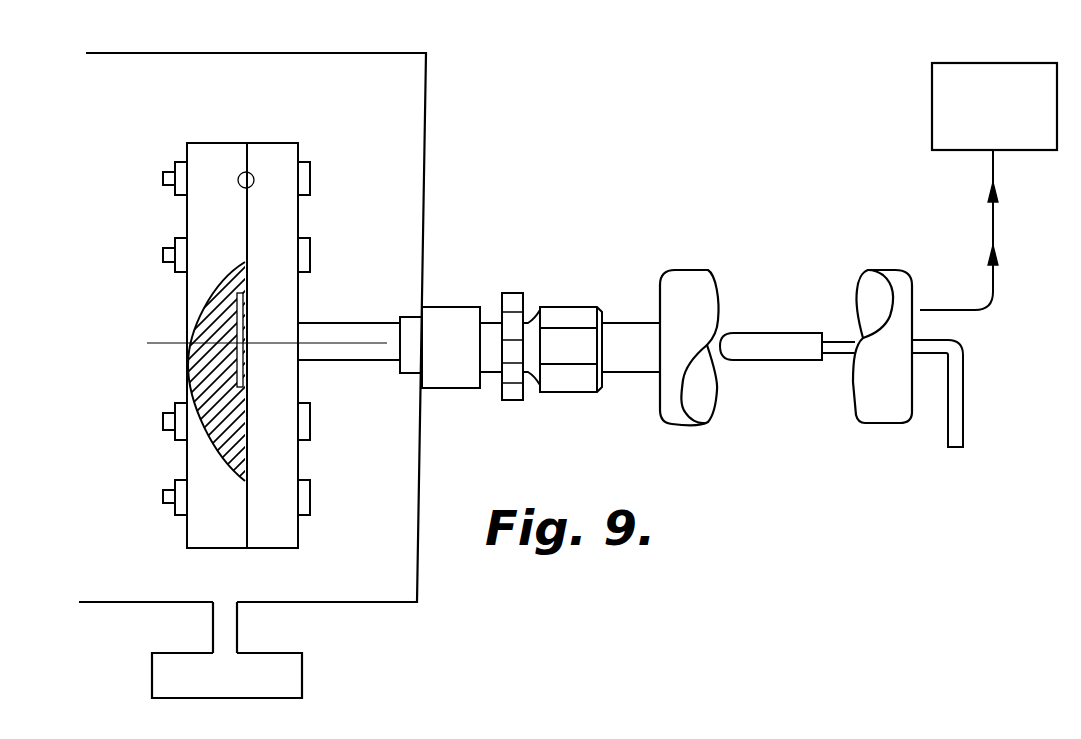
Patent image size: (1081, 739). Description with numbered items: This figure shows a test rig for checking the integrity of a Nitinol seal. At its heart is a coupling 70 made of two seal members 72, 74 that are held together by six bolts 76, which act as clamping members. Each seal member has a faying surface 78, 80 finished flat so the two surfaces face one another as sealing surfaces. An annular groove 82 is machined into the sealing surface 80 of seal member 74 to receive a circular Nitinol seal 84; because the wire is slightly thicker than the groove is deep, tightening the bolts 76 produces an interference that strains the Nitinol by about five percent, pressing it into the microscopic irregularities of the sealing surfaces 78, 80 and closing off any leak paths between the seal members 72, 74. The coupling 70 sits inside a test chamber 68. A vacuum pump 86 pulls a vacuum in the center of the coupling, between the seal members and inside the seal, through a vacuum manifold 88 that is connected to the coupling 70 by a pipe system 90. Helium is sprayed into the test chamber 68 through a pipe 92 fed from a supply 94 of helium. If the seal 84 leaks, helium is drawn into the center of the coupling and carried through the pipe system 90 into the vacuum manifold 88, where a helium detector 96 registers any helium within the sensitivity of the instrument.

The test chamber 68 is at (368, 53).
The coupling 70 is at (187, 125).
The seal member 72 is at (277, 220).
The seal member 74 is at (215, 227).
The bolts 76 is at (310, 172).
The faying surface 78 is at (255, 188).
The faying surface 80 is at (267, 150).
The annular groove 82 is at (218, 410).
The Nitinol seal 84 is at (240, 440).
The vacuum pump 86 is at (932, 98).
The vacuum manifold 88 is at (695, 270).
The pipe system 90 is at (638, 323).
The pipe 92 is at (213, 620).
The supply of helium 94 is at (152, 668).
The helium detector 96 is at (778, 333).